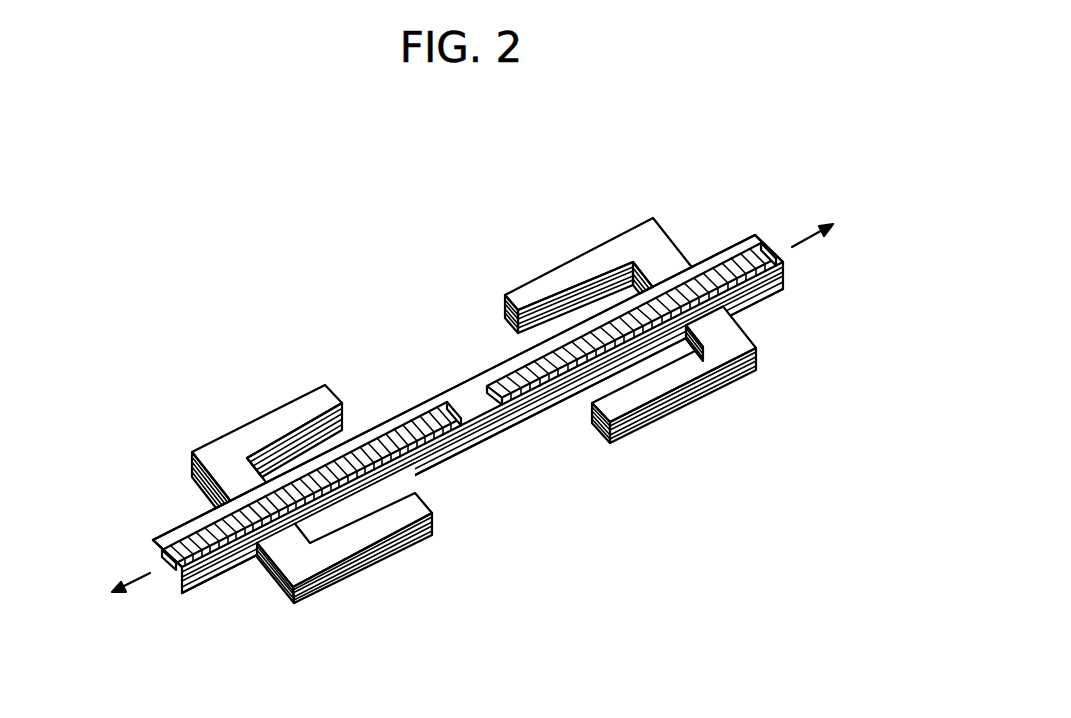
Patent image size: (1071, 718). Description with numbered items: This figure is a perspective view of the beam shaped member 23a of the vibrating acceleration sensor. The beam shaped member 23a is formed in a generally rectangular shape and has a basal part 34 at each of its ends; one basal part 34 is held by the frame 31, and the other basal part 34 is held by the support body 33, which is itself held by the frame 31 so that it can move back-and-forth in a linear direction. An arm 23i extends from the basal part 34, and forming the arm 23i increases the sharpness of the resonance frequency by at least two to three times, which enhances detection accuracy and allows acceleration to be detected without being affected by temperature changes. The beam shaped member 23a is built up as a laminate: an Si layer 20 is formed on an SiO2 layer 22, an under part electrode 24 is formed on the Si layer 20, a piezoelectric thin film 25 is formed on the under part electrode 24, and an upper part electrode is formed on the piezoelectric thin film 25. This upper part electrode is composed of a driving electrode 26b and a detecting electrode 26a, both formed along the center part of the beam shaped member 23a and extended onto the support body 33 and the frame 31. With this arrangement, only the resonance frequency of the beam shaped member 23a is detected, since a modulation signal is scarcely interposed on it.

The Si layer 20 is at (323, 588).
The SiO2 layer 22 is at (297, 597).
The beam shaped member 23a is at (398, 378).
The arm 23i is at (562, 283).
The under part electrode 24 is at (282, 593).
The piezoelectric thin film 25 is at (278, 585).
The detecting electrode 26a is at (208, 523).
The driving electrode 26b is at (507, 380).
The frame 31 is at (99, 601).
The support body 33 is at (862, 218).
The basal part 34 is at (755, 236).